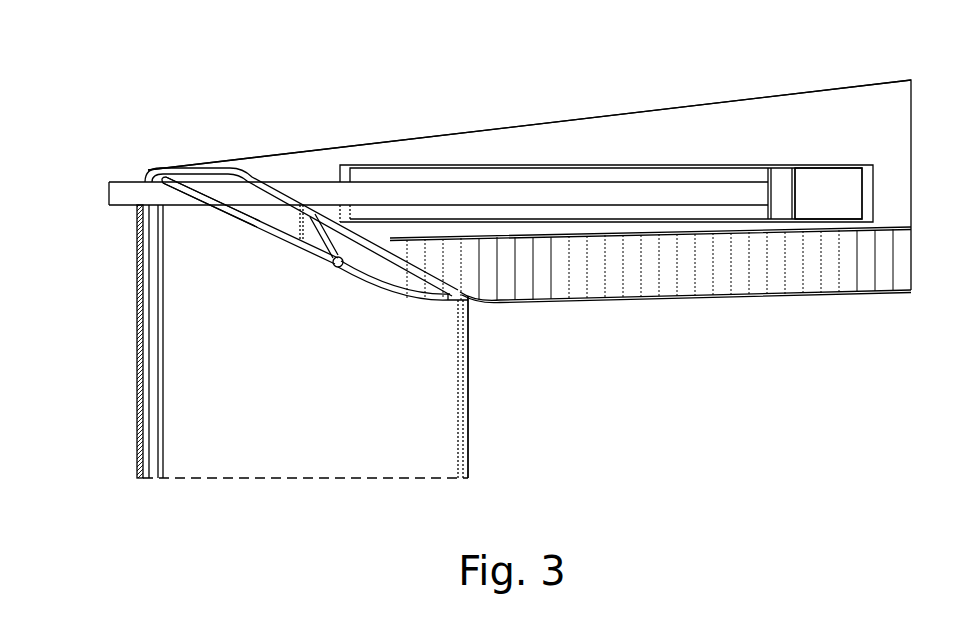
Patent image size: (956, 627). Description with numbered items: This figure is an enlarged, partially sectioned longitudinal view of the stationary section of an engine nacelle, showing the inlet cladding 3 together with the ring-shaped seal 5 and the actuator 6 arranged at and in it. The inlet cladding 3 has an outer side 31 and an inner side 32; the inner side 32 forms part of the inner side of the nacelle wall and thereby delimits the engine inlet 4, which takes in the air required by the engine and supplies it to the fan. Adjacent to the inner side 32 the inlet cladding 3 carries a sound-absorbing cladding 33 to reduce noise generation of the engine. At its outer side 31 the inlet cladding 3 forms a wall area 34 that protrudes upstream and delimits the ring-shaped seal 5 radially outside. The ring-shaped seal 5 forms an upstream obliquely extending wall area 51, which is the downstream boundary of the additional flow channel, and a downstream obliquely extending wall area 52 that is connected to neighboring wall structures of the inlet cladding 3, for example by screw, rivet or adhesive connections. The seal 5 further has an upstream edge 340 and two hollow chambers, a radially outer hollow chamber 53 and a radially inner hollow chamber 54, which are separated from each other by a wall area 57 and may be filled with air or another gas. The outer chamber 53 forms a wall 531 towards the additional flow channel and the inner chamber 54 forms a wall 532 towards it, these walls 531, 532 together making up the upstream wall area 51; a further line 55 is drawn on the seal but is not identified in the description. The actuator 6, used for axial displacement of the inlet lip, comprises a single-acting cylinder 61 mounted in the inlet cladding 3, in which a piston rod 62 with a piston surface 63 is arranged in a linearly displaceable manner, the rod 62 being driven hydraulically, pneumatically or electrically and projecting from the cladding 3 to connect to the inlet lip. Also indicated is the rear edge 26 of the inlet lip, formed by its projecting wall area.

The inlet cladding 3 is at (612, 114).
The outer side 31 is at (688, 106).
The inner side 32 is at (662, 300).
The sound-absorbing cladding 33 is at (795, 270).
The wall area 34 is at (184, 166).
The upstream edge 340 is at (137, 270).
The engine inlet 4 is at (657, 487).
The ring-shaped seal 5 is at (450, 425).
The upstream obliquely extending wall area 51 is at (300, 213).
The downstream obliquely extending wall area 52 is at (250, 170).
The radially outer hollow chamber 53 is at (283, 225).
The wall 531 is at (258, 208).
The wall 532 is at (440, 300).
The radially inner hollow chamber 54 is at (380, 273).
The post wall 55 is at (160, 365).
The wall area 57 is at (328, 268).
The actuator 6 is at (383, 167).
The single-acting cylinder 61 is at (838, 165).
The piston rod 62 is at (552, 192).
The piston surface 63 is at (780, 182).
The rear edge 26 is at (470, 355).